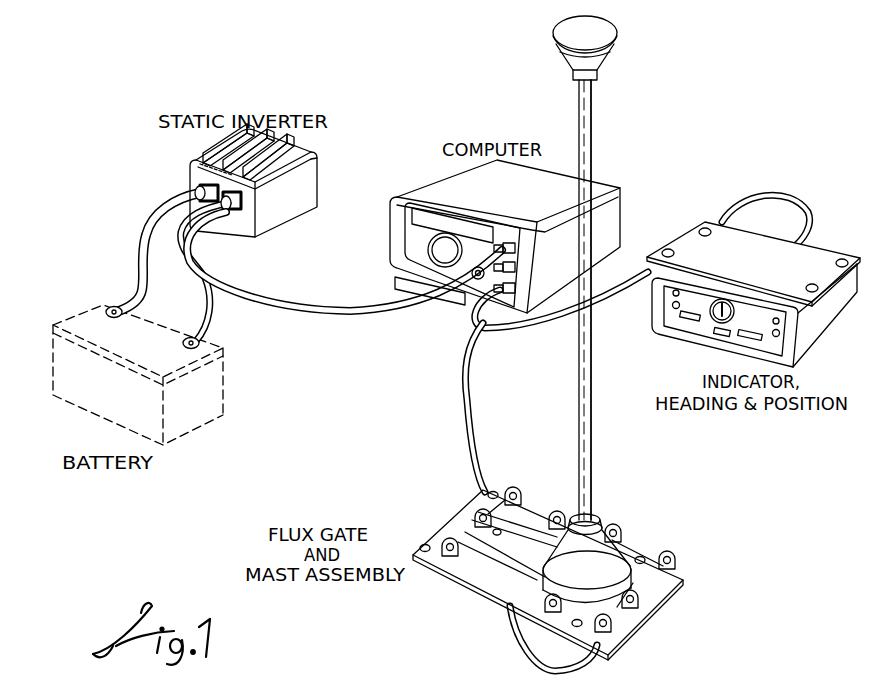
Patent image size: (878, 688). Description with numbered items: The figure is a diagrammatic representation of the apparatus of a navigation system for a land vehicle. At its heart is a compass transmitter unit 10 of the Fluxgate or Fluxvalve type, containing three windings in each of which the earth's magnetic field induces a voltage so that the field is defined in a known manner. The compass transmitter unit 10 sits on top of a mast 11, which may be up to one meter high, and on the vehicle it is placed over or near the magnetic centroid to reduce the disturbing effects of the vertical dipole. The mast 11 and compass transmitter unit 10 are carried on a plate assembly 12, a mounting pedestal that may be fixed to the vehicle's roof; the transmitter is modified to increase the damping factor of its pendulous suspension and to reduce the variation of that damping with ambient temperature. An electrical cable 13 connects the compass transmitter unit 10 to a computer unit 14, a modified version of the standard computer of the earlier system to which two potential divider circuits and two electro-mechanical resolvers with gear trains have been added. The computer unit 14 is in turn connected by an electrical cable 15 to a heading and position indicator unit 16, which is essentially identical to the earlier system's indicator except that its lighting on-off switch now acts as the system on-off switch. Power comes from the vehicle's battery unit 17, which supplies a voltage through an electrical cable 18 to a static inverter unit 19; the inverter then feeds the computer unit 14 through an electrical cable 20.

The compass transmitter unit 10 is at (617, 28).
The mast 11 is at (593, 364).
The plate assembly 12 is at (676, 596).
The electrical cable 13 is at (471, 408).
The computer unit 14 is at (460, 188).
The electrical cable 15 is at (772, 192).
The heading and position indicator unit 16 is at (798, 351).
The battery unit 17 is at (211, 385).
The electrical cable 18 is at (140, 228).
The static inverter unit 19 is at (197, 168).
The electrical cable 20 is at (322, 302).